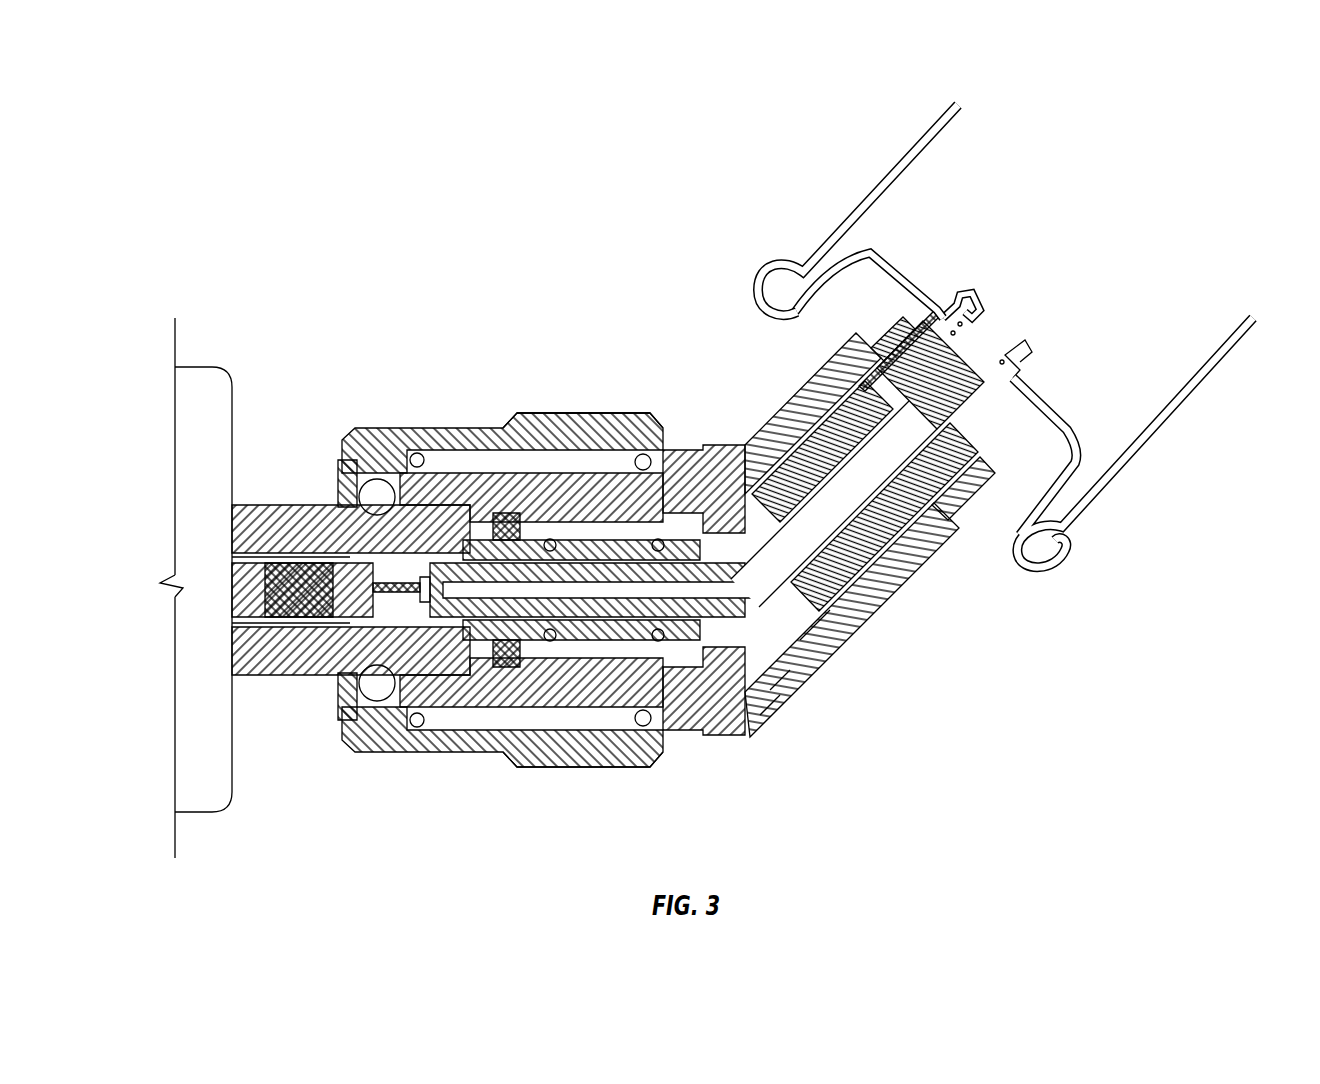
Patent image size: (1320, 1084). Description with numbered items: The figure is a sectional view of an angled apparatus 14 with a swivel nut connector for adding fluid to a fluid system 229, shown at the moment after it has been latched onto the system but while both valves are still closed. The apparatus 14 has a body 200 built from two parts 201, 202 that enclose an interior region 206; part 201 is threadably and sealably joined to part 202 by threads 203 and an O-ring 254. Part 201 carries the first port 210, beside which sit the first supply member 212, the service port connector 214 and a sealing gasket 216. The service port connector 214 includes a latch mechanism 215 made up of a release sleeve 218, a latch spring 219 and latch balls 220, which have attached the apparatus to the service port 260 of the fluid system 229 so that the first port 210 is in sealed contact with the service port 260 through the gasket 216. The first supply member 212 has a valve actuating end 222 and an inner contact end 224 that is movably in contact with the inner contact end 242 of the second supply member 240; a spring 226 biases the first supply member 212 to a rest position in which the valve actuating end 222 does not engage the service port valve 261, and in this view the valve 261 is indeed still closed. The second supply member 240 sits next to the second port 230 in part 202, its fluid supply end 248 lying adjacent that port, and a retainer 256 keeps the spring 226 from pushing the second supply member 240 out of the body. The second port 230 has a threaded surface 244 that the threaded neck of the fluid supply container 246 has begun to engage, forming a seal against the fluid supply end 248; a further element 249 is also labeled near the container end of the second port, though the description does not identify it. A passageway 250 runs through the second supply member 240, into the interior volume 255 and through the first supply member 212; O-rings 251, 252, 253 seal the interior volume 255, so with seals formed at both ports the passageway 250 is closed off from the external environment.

The apparatus 14 is at (541, 121).
The body 200 is at (860, 640).
The first body part 201 is at (573, 483).
The second body part 202 is at (770, 712).
The threads 203 is at (725, 452).
The interior region 206 is at (790, 680).
The first port 210 is at (420, 745).
The first supply member 212 is at (600, 700).
The service port connector 214 is at (565, 410).
The latch mechanism 215 is at (588, 414).
The sealing gasket 216 is at (418, 455).
The release sleeve 218 is at (388, 425).
The latch spring 219 is at (356, 470).
The latch balls 220 is at (372, 484).
The valve actuating end 222 is at (395, 715).
The inner contact end 224 is at (780, 700).
The spring 226 is at (545, 640).
The fluid system 229 is at (190, 370).
The second port 230 is at (866, 342).
The second supply member 240 is at (872, 612).
The inner contact end 242 is at (805, 640).
The threaded surface 244 is at (838, 368).
The fluid supply container 246 is at (887, 172).
The fluid supply end 248 is at (983, 430).
The clip fitting 249 is at (987, 352).
The passageway 250 is at (602, 630).
The O-ring 251 is at (887, 582).
The O-ring 252 is at (697, 455).
The O-ring 253 is at (497, 478).
The O-ring 254 is at (773, 430).
The interior volume 255 is at (790, 705).
The retainer 256 is at (906, 540).
The service port 260 is at (462, 700).
The service port valve 261 is at (340, 676).